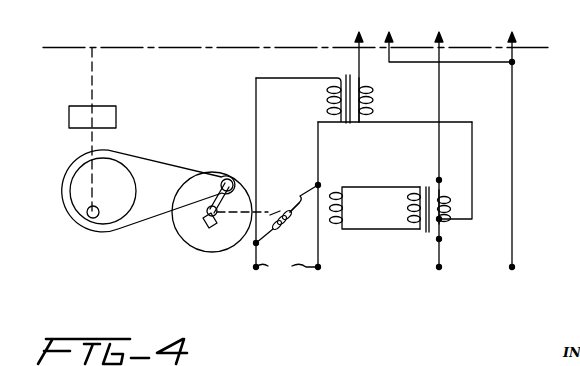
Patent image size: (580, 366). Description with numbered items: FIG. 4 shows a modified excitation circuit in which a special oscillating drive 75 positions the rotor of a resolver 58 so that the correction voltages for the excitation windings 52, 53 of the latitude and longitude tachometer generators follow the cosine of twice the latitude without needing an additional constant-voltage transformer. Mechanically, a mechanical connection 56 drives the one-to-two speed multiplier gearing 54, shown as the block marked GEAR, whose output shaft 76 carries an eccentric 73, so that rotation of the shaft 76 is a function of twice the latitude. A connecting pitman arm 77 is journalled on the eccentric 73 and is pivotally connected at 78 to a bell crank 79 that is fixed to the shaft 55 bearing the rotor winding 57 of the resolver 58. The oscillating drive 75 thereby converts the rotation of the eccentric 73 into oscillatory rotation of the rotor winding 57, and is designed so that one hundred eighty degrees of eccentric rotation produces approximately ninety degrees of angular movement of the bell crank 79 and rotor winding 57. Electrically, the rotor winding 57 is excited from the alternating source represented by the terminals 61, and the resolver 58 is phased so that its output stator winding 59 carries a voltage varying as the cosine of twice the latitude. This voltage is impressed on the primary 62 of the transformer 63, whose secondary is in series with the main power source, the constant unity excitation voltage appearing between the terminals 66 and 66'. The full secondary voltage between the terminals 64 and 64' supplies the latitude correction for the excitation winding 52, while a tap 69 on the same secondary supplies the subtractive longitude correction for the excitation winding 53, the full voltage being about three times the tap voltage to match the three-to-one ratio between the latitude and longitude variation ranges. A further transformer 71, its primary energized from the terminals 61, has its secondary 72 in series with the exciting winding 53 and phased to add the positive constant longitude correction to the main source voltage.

The excitation winding 52 is at (450, 133).
The excitation winding 53 is at (381, 61).
The speed multiplier gearing 54 is at (116, 122).
The shaft 55 is at (279, 208).
The mechanical connection 56 is at (93, 72).
The rotor winding 57 is at (294, 201).
The resolver 58 is at (308, 246).
The output stator winding 59 is at (336, 186).
The terminals 61 is at (287, 265).
The primary winding 62 is at (408, 208).
The transformer 63 is at (428, 186).
The secondary terminal 64 is at (453, 149).
The secondary terminal 64' is at (454, 245).
The terminal 66 is at (529, 276).
The terminal 66' is at (455, 276).
The tap 69 is at (452, 207).
The transformer 71 is at (347, 74).
The secondary winding 72 is at (368, 101).
The eccentric 73 is at (62, 191).
The oscillating drive 75 is at (158, 249).
The output shaft 76 is at (92, 144).
The pitman arm 77 is at (163, 166).
The pivot connection 78 is at (236, 178).
The bell crank 79 is at (206, 208).